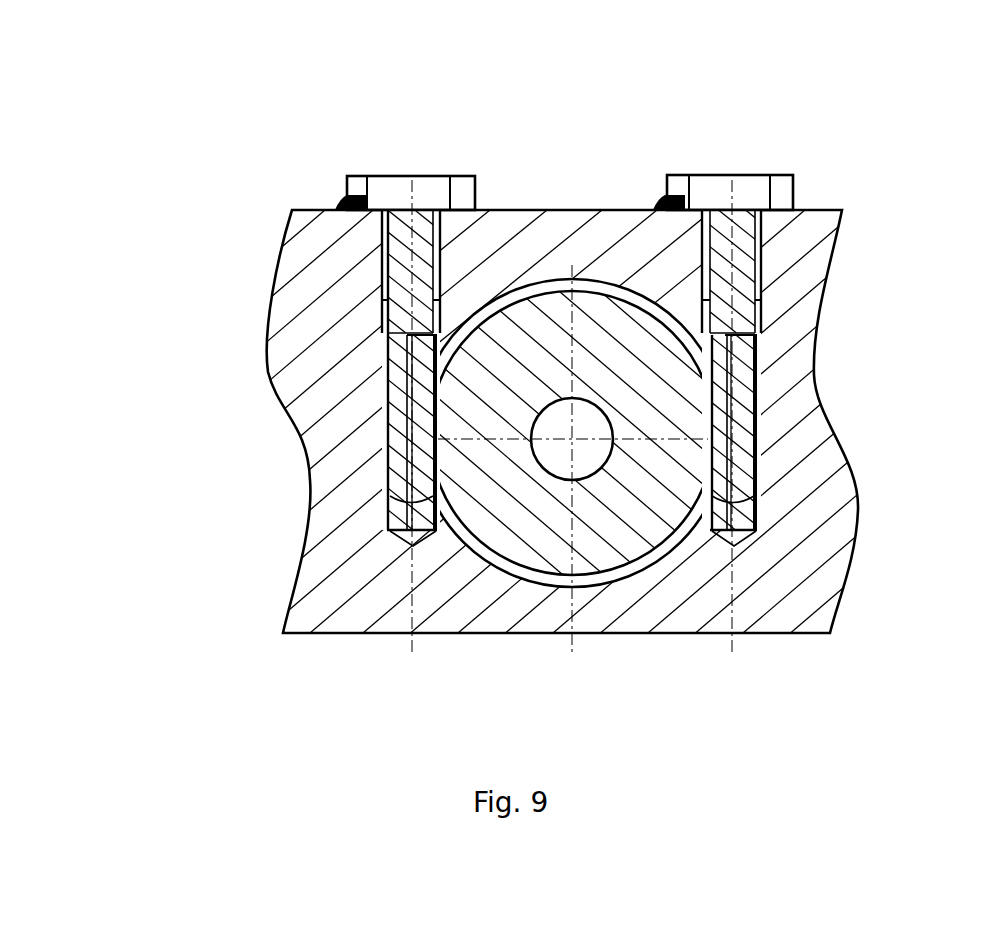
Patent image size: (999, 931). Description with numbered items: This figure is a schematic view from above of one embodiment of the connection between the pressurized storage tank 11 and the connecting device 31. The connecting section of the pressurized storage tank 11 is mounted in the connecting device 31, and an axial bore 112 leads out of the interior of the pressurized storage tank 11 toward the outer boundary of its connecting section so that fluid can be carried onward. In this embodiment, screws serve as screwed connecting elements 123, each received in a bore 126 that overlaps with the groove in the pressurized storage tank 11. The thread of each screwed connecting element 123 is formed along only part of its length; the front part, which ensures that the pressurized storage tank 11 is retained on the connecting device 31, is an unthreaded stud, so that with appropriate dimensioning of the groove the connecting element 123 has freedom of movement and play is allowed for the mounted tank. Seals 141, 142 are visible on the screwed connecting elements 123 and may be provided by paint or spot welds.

The connecting device 31 is at (512, 240).
The pressurized storage tank 11 is at (622, 528).
The axial bore 112 is at (579, 449).
The seal 141 is at (668, 200).
The seal 142 is at (345, 200).
The screwed connecting element 123 is at (400, 358).
The bore 126 is at (415, 523).